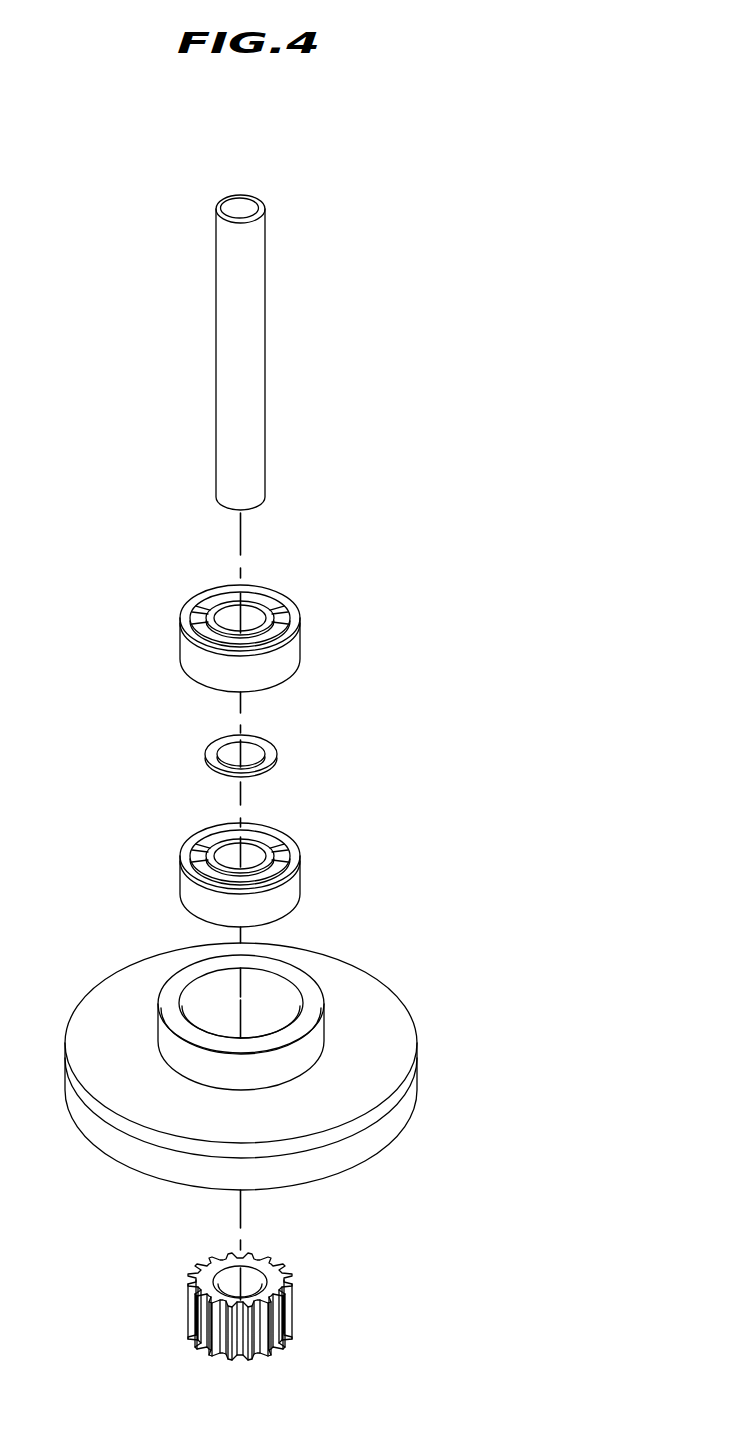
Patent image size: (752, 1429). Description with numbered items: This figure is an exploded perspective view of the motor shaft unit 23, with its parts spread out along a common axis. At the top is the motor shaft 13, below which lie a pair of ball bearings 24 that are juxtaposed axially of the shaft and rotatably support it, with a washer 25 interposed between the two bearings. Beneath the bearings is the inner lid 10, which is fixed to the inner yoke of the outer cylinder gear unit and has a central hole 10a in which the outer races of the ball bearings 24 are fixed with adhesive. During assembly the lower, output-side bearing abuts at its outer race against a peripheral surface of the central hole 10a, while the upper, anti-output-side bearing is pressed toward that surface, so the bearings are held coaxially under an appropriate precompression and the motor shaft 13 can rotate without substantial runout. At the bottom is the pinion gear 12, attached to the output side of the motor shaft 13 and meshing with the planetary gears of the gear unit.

The motor shaft unit 23 is at (300, 192).
The motor shaft 13 is at (250, 315).
The ball bearings 24 is at (292, 650).
The washer 25 is at (270, 758).
The inner lid 10 is at (393, 1025).
The central hole 10a is at (210, 1007).
The pinion gear 12 is at (293, 1305).